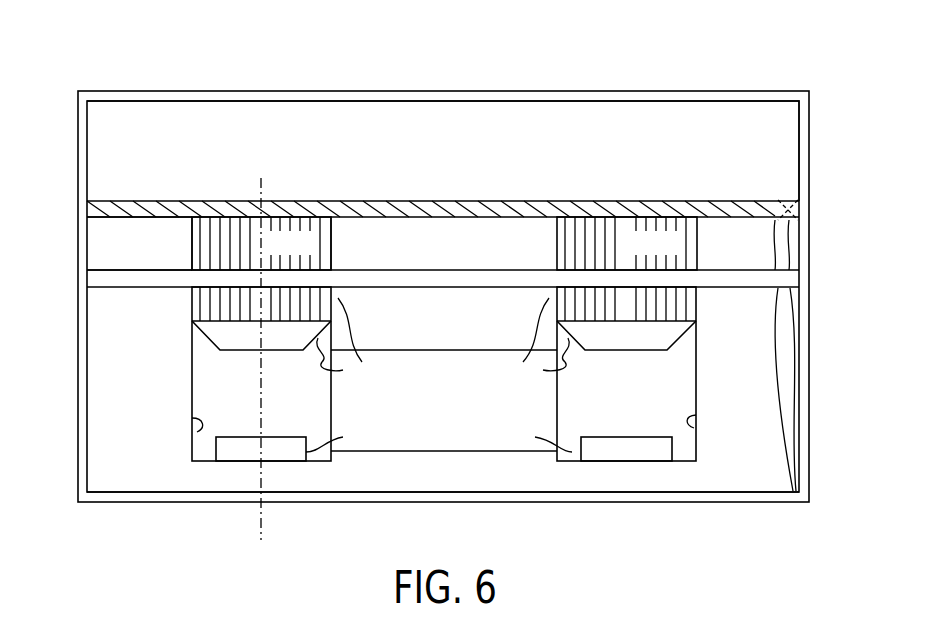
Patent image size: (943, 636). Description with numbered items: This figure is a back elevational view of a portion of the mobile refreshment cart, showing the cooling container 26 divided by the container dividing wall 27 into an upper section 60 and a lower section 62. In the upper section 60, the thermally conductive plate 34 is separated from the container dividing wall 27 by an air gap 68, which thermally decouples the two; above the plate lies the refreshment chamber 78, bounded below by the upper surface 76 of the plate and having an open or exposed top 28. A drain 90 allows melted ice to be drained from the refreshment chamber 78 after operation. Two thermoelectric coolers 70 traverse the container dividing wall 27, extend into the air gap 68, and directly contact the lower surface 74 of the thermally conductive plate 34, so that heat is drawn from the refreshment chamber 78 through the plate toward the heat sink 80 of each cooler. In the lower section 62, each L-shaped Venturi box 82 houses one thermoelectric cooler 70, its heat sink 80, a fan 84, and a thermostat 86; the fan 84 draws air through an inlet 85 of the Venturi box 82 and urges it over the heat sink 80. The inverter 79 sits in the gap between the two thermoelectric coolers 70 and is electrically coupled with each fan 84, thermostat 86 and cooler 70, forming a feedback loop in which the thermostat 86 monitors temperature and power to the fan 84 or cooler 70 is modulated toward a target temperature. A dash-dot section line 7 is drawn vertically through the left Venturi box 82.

The exposed top 28 is at (701, 90).
The cooling container 26 is at (85, 155).
The upper section 60 is at (72, 102).
The lower section 62 is at (72, 290).
The thermally conductive plate 34 is at (103, 206).
The air gap 68 is at (154, 247).
The upper surface 76 is at (284, 201).
The lower surface 74 is at (118, 219).
The thermoelectric cooler 70 is at (332, 243).
The refreshment chamber 78 is at (751, 131).
The drain 90 is at (784, 199).
The container dividing wall 27 is at (782, 279).
The inverter 79 is at (443, 350).
The heat sink 80 is at (200, 303).
The fan 84 is at (237, 351).
The Venturi box 82 is at (192, 398).
The inlet 85 is at (197, 432).
The thermostat 86 is at (243, 461).
The section line 7- 7 is at (213, 540).